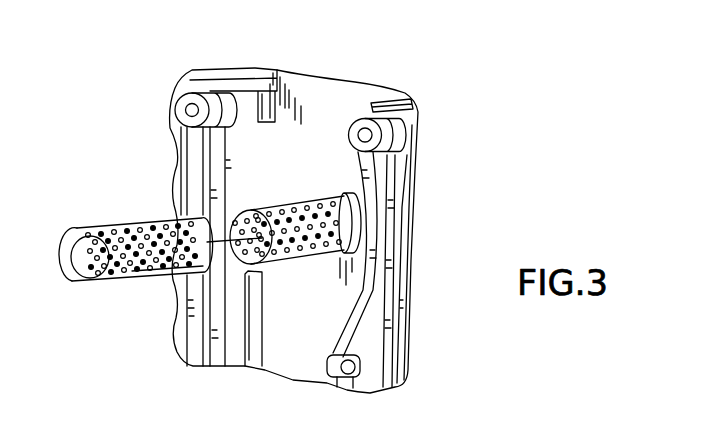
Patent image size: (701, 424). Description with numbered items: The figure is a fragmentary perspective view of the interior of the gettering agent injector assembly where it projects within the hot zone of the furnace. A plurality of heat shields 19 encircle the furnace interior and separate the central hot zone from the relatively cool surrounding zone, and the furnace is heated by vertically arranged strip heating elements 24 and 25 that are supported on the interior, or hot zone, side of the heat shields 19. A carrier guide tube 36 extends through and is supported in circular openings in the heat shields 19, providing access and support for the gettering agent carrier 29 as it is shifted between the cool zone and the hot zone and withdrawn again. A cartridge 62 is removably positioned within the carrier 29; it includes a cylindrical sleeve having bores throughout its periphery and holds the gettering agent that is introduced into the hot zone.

The heat shields 19 is at (321, 120).
The strip heating element 24 is at (194, 178).
The strip heating element 25 is at (390, 205).
The carrier guide tube 36 is at (333, 196).
The gettering agent carrier 29 is at (313, 257).
The cartridge 62 is at (143, 283).